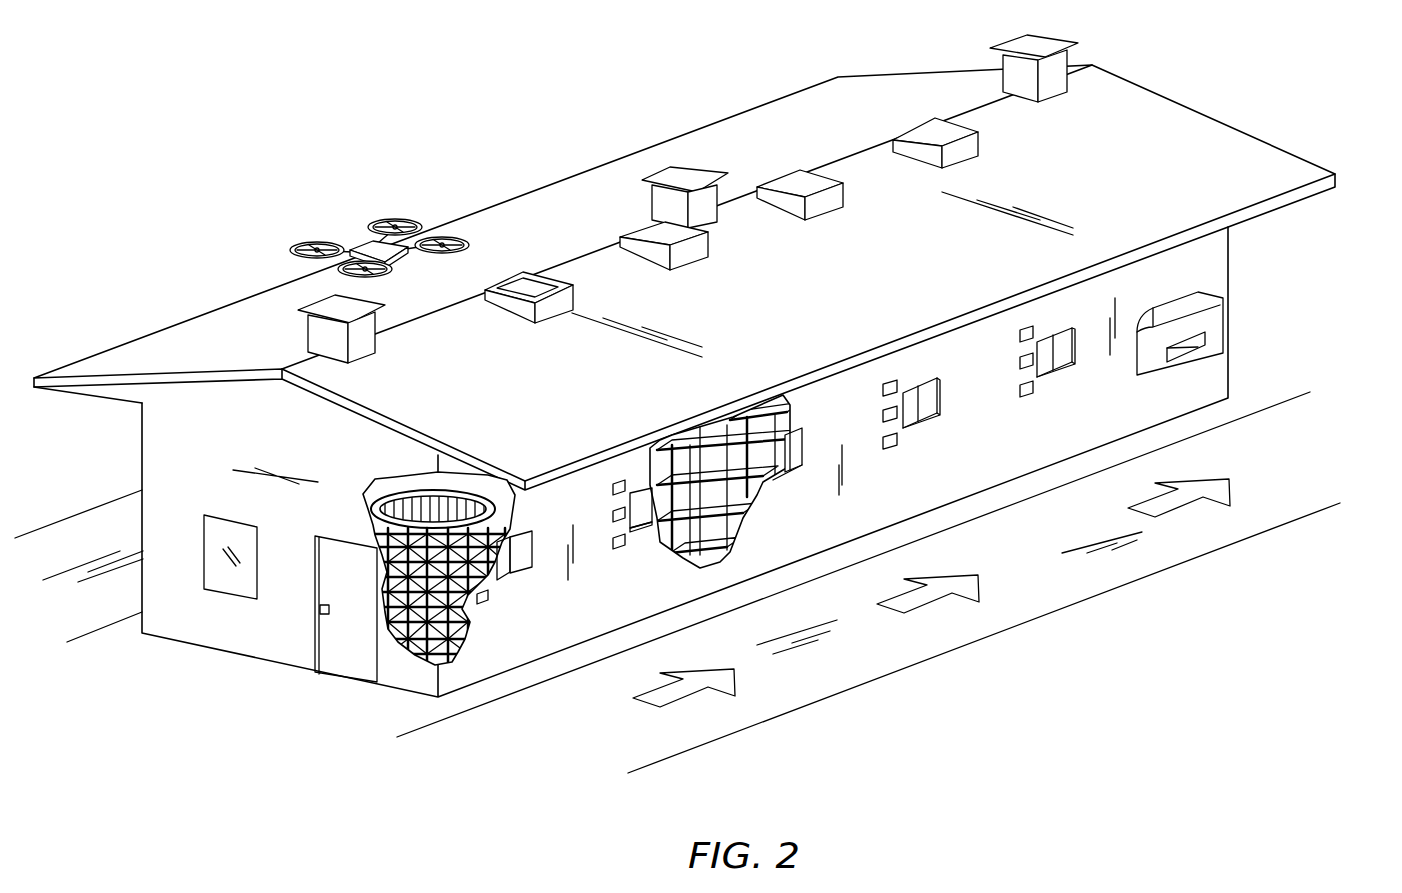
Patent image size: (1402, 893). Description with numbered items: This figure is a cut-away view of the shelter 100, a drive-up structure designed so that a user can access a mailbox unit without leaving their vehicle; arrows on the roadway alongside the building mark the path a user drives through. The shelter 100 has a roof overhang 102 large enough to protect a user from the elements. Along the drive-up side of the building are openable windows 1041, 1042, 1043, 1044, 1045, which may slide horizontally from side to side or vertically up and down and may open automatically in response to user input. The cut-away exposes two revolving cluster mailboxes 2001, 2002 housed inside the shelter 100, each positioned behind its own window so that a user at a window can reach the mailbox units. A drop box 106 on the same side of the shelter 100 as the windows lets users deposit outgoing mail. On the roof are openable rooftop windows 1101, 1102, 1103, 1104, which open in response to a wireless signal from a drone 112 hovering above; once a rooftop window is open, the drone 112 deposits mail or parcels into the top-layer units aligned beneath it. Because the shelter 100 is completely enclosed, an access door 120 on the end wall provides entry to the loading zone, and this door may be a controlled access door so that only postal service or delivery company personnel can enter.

The shelter 100 is at (205, 274).
The roof overhang 102 is at (862, 360).
The openable window 1041 is at (520, 562).
The openable window 1042 is at (652, 510).
The openable window 1043 is at (803, 438).
The openable window 1044 is at (925, 410).
The openable window 1045 is at (1062, 360).
The drop box 106 is at (1215, 323).
The openable rooftop window 1101 is at (553, 312).
The openable rooftop window 1102 is at (688, 255).
The openable rooftop window 1103 is at (825, 202).
The openable rooftop window 1104 is at (972, 143).
The drone 112 is at (367, 245).
The access door 120 is at (330, 648).
The revolving cluster mailbox 2001 is at (398, 653).
The revolving cluster mailbox 2002 is at (703, 547).